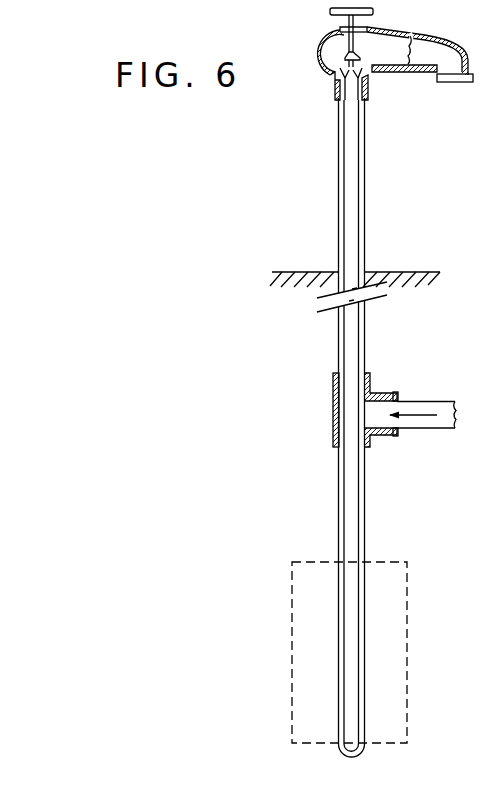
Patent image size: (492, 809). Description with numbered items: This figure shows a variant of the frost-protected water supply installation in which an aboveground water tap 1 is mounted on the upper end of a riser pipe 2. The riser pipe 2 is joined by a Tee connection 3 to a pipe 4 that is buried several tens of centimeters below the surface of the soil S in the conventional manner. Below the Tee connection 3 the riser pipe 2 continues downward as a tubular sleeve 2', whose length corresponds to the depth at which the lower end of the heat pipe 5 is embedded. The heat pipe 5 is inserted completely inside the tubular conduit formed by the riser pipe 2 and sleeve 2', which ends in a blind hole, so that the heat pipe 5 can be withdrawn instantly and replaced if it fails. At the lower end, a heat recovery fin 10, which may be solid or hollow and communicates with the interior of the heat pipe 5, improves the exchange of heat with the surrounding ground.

The water tap 1 is at (427, 36).
The riser pipe 2 is at (367, 195).
The tubular sleeve 2' is at (343, 528).
The heat pipe 5 is at (352, 188).
The soil surface S is at (394, 268).
The Tee connection 3 is at (371, 392).
The buried pipe 4 is at (432, 432).
The heat recovery fin 10 is at (398, 643).